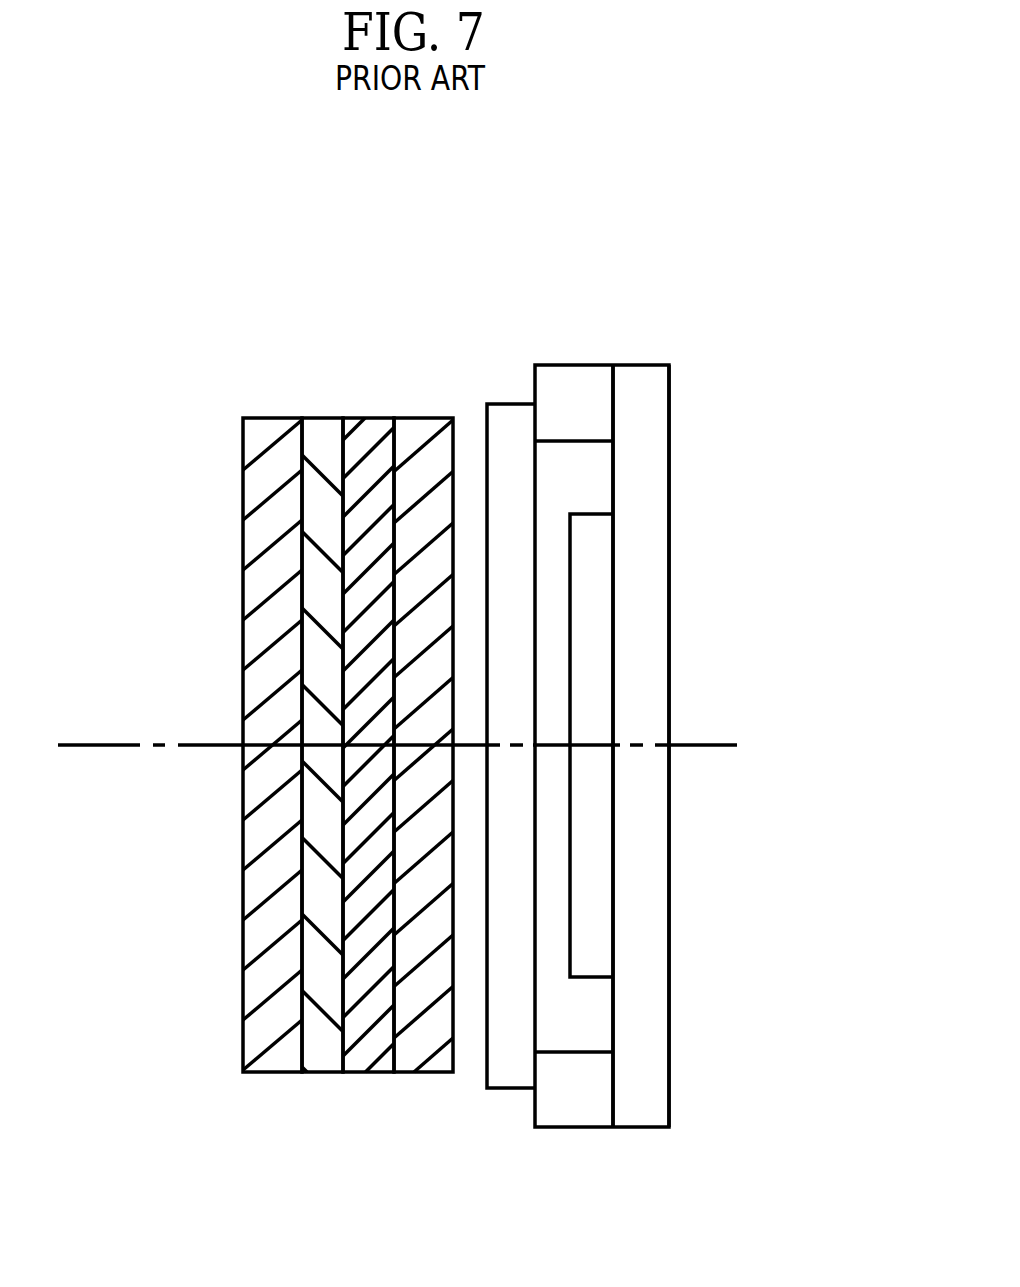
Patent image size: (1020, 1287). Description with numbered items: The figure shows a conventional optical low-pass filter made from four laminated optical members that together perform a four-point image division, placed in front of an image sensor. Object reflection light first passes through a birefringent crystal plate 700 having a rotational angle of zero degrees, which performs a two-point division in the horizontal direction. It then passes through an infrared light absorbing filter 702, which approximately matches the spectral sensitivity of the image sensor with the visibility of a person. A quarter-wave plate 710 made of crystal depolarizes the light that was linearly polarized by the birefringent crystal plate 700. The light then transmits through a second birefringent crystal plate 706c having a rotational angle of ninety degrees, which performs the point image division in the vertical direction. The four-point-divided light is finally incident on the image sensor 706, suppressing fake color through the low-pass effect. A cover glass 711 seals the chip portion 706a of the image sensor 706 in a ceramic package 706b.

The birefringent crystal plate 700 is at (274, 448).
The infrared light absorbing filter 702 is at (322, 450).
The λ/4-wave plate 710 is at (368, 450).
The birefringent crystal plate 706c is at (422, 445).
The image sensor 706 is at (697, 746).
The chip portion 706a is at (592, 868).
The ceramic package 706b is at (645, 1027).
The cover glass 711 is at (510, 1065).